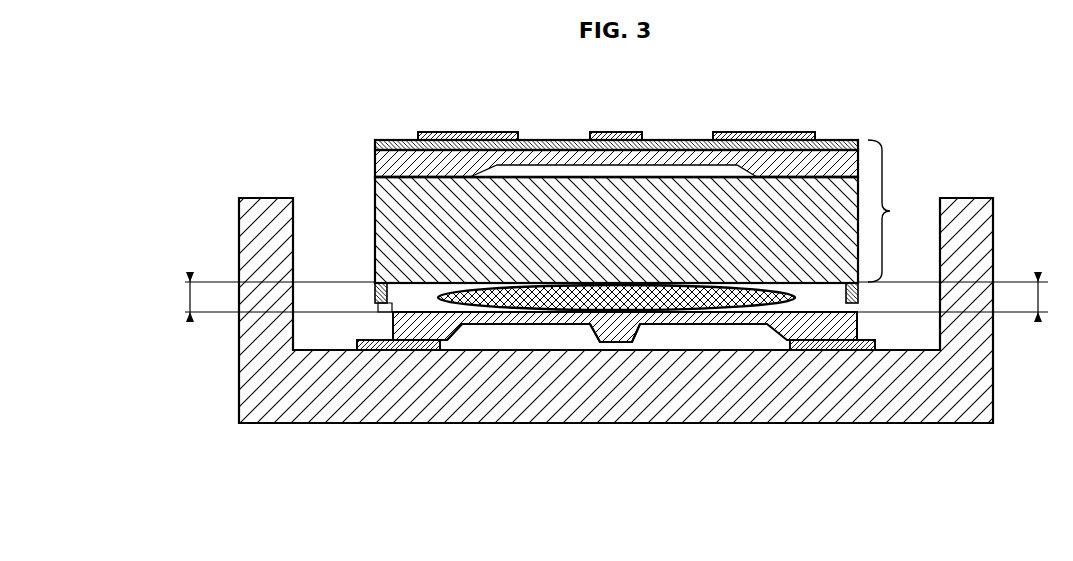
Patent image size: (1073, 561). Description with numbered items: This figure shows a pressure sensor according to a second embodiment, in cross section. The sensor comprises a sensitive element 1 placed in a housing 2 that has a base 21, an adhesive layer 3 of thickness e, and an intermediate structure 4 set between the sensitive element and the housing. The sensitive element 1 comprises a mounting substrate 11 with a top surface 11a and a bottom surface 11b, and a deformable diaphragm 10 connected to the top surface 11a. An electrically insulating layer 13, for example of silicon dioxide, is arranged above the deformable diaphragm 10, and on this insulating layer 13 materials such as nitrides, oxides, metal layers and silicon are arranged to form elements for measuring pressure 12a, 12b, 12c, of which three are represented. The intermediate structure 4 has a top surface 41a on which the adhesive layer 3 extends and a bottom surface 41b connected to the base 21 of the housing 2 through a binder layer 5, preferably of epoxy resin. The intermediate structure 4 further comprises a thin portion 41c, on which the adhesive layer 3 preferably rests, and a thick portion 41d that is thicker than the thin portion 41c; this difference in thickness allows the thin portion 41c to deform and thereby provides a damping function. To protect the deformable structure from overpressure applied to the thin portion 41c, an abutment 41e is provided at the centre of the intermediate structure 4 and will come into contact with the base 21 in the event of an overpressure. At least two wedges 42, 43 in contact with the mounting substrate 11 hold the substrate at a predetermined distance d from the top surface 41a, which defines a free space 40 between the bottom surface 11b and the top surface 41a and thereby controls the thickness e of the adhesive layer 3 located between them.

The sensitive element 1 is at (599, 191).
The housing 2 is at (968, 386).
The base 21 is at (305, 351).
The adhesive layer 3 is at (722, 301).
The intermediate structure 4 is at (553, 314).
The free space 40 is at (812, 300).
The top surface 41a is at (665, 314).
The bottom surface 41b is at (424, 340).
The thin portion 41c is at (527, 325).
The thick portion 41d is at (385, 328).
The abutment 41e is at (628, 343).
The wedge 42 is at (848, 293).
The wedge 43 is at (392, 292).
The binder layer 5 is at (407, 348).
The deformable diaphragm 10 is at (837, 162).
The mounting substrate 11 is at (397, 223).
The top surface 11a is at (374, 177).
The bottom surface 11b is at (373, 281).
The element for measuring pressure 12a is at (470, 132).
The element for measuring pressure 12b is at (618, 132).
The element for measuring pressure 12c is at (768, 132).
The electrically insulating layer 13 is at (678, 148).
The predetermined distance d is at (283, 297).
The thickness e is at (954, 297).